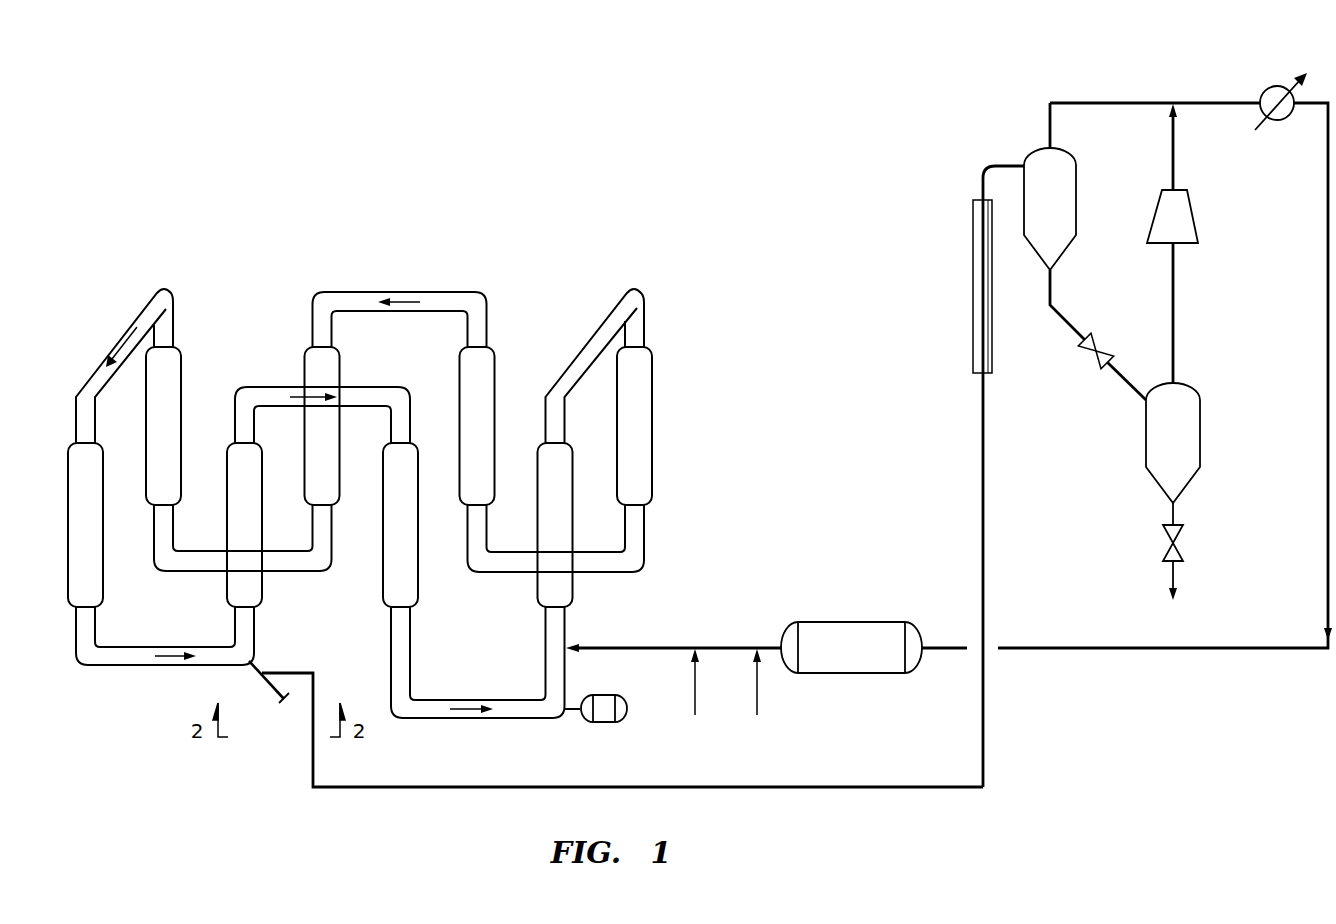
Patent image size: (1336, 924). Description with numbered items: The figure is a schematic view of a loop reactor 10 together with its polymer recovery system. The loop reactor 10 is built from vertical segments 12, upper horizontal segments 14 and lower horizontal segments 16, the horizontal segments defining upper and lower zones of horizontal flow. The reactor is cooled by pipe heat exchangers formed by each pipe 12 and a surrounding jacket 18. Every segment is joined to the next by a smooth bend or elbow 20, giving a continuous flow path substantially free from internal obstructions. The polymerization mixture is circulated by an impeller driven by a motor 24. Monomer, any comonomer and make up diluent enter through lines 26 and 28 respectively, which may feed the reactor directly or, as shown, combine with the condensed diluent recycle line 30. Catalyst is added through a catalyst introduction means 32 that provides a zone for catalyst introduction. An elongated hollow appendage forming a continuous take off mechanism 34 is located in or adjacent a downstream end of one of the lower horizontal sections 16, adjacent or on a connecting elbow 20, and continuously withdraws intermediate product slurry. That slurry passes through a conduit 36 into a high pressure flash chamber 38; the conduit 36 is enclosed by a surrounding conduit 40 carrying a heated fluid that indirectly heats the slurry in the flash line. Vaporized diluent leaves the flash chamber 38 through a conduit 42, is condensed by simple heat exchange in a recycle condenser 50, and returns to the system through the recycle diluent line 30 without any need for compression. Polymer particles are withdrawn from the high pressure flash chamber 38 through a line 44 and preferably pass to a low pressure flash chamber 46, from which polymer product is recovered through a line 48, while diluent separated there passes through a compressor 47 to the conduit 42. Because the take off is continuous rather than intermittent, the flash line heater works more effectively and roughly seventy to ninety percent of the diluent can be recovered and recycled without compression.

The loop reactor 10 is at (380, 224).
The vertical segments 12 is at (76, 632).
The upper horizontal segments 14 is at (140, 310).
The lower horizontal segments 16 is at (603, 572).
The jacket 18 is at (68, 465).
The elbow 20 is at (235, 645).
The motor 24 is at (603, 722).
The monomer line 26 is at (758, 700).
The make up diluent line 28 is at (697, 700).
The condensed diluent recycle line 30 is at (667, 647).
The catalyst introduction means 32 is at (408, 730).
The continuous take off mechanism 34 is at (253, 663).
The conduit 36 is at (981, 518).
The high pressure flash chamber 38 is at (1069, 208).
The surrounding conduit 40 is at (973, 248).
The conduit 42 is at (1098, 103).
The line 44 is at (1067, 314).
The low pressure flash chamber 46 is at (1155, 439).
The compressor 47 is at (1198, 220).
The line 48 is at (1173, 575).
The recycle condenser 50 is at (1270, 86).